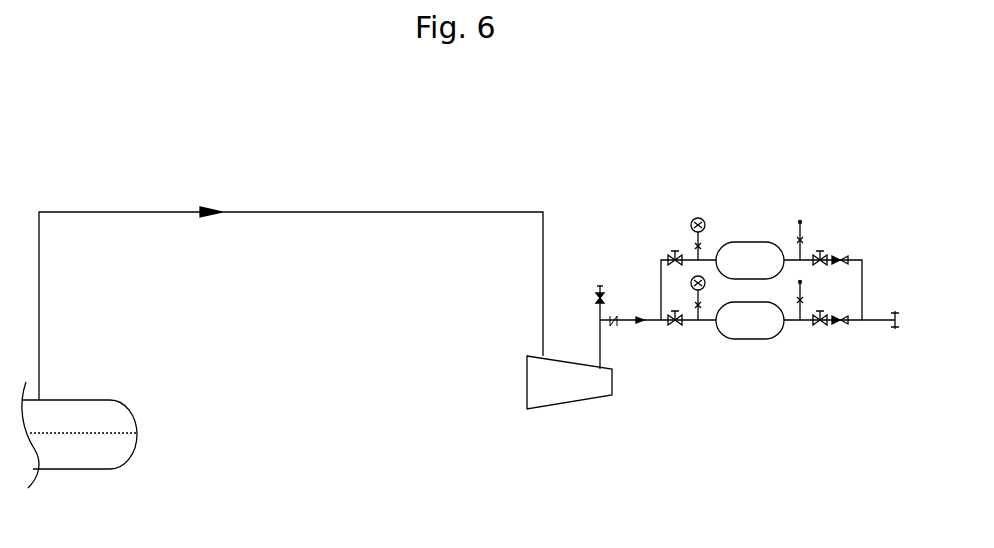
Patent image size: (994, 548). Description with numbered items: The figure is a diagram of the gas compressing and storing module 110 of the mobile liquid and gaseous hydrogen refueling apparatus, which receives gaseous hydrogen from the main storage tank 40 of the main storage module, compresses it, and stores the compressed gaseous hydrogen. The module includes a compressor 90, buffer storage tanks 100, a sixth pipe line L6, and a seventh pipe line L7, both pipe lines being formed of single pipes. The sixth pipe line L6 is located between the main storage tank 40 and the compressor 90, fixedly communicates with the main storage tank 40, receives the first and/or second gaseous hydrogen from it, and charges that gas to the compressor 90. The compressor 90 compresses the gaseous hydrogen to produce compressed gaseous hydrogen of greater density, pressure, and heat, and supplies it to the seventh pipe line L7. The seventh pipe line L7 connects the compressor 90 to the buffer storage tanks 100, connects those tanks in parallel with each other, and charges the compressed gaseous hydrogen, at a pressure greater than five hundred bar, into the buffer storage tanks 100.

The gas compressing and storing module 110 is at (522, 126).
The main storage tank 40 is at (137, 452).
The sixth pipe line L6 is at (338, 213).
The compressor 90 is at (568, 408).
The buffer storage tanks 100 is at (748, 340).
The seventh pipe line L7 is at (863, 280).